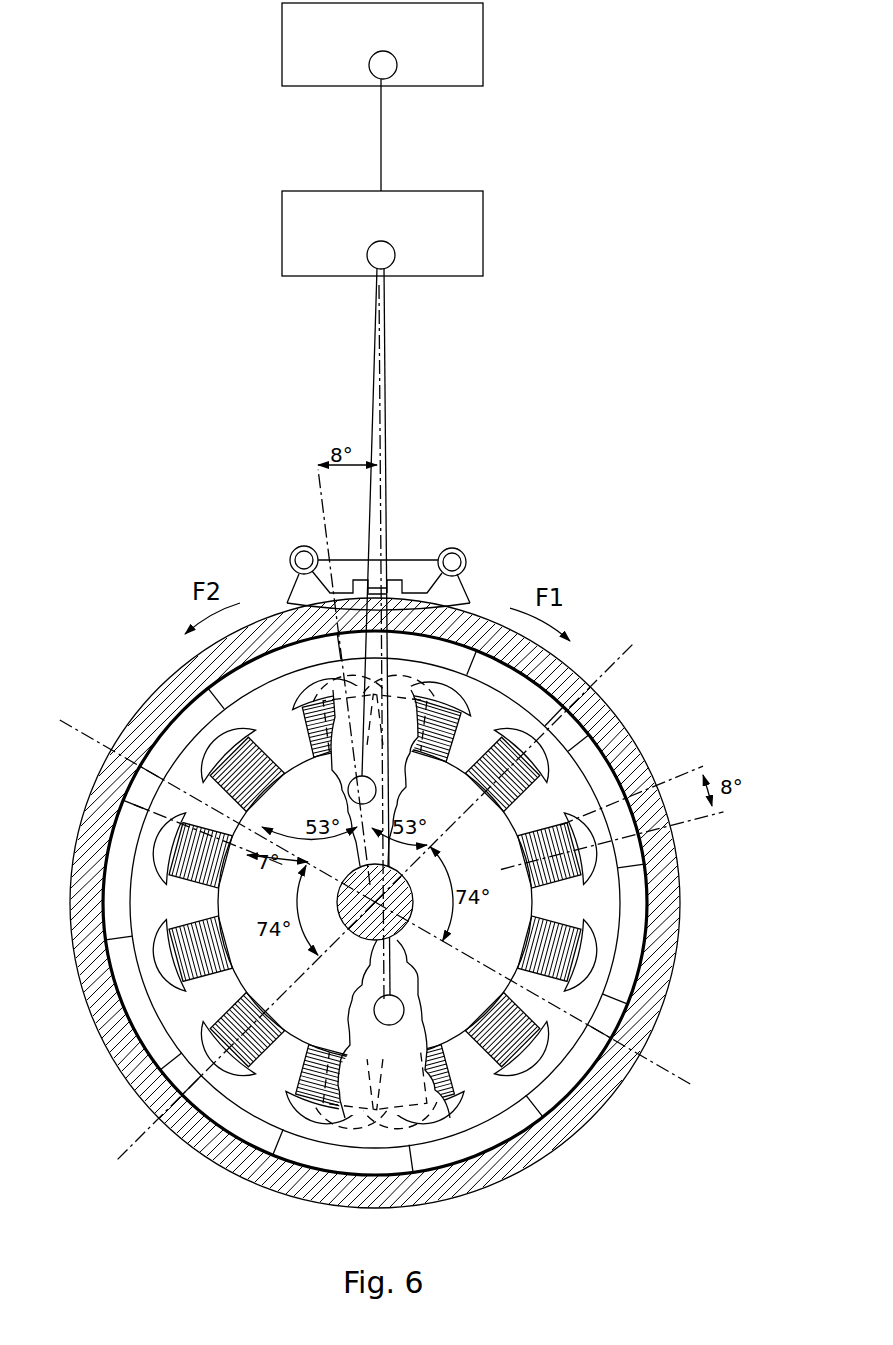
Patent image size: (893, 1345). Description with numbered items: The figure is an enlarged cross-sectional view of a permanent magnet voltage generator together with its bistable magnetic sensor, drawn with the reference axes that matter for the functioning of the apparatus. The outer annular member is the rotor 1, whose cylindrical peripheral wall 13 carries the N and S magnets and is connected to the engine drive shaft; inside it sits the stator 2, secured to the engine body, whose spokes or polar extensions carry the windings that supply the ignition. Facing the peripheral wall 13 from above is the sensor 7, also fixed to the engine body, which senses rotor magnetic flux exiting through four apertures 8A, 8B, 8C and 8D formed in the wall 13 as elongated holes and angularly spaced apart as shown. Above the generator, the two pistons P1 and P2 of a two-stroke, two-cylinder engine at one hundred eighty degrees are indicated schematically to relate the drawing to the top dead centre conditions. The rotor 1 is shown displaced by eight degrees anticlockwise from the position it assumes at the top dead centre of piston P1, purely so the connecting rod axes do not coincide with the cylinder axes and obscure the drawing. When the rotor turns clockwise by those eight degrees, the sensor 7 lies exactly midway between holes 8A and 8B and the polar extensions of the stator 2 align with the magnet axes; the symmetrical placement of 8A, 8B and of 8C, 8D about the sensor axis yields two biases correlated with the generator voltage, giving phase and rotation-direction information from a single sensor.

The piston P1 is at (468, 33).
The piston P2 is at (467, 218).
The sensor 7 is at (408, 550).
The aperture 8A is at (590, 703).
The aperture 8B is at (120, 745).
The aperture 8C is at (160, 1117).
The aperture 8D is at (650, 1050).
The stator 2 is at (262, 905).
The rotor 1 is at (690, 869).
The peripheral wall 13 is at (672, 940).